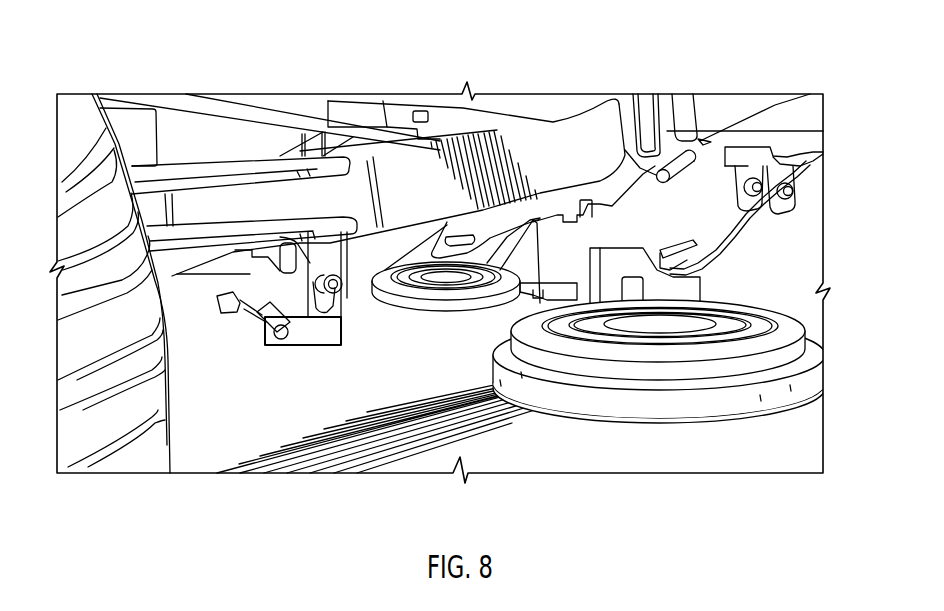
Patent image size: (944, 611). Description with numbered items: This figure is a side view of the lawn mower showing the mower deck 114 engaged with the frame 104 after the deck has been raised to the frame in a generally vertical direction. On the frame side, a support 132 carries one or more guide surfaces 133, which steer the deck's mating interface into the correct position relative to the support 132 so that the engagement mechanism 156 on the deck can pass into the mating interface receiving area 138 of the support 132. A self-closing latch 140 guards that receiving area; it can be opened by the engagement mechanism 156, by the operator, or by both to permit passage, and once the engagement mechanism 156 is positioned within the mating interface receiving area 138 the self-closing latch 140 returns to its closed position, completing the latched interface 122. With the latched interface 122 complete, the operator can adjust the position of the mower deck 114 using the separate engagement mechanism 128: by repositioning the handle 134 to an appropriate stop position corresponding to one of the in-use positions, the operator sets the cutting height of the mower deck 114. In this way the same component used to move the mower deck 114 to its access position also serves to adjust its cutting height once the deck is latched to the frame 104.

The frame 104 is at (684, 114).
The mower deck 114 is at (358, 458).
The latched interface 122 is at (385, 323).
The engagement mechanism 128 is at (546, 134).
The support 132 is at (320, 338).
The guide surfaces 133 is at (270, 262).
The handle 134 is at (700, 136).
The mating interface receiving area 138 is at (320, 318).
The self-closing latch 140 is at (262, 313).
The engagement mechanism 156 is at (339, 286).